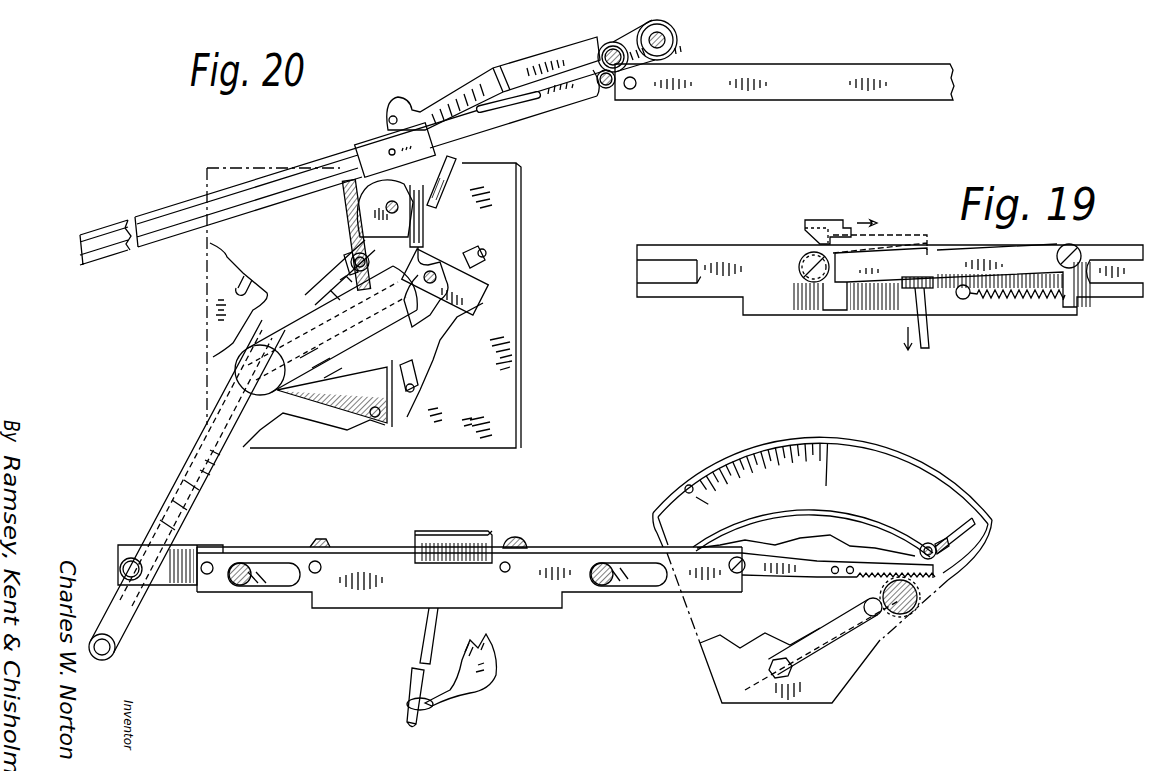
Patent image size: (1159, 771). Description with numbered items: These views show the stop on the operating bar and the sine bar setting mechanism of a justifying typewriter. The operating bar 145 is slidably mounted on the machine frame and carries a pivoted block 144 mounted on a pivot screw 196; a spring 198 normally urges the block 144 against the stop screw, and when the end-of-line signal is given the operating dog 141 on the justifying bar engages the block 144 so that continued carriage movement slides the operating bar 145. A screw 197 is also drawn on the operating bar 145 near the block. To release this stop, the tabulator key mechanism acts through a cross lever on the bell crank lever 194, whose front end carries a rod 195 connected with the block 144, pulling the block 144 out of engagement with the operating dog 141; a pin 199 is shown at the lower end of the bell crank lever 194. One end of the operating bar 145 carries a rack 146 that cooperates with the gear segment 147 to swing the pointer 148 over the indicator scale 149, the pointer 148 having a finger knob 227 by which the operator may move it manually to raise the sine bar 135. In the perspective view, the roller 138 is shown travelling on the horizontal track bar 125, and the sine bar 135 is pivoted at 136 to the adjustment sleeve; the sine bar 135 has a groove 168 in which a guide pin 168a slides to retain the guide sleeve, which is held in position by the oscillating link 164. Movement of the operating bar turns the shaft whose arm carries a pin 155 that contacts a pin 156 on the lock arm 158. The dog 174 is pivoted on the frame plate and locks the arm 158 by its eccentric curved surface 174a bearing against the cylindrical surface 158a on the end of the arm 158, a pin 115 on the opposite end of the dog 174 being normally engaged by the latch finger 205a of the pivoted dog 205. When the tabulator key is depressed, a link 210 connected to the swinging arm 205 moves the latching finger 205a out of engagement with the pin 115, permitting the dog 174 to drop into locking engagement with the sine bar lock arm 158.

In FIG. 20, the sine bar 135 is at (160, 209).
In FIG. 20, the oscillating link 164 is at (490, 70).
In FIG. 20, the roller 138 is at (604, 50).
In FIG. 20, the guide pin 168a is at (380, 143).
In FIG. 20, the groove 168 is at (500, 114).
In FIG. 20, the pivot 136 is at (597, 100).
In FIG. 20, the track bar 125 is at (728, 98).
In FIG. 20, the pin 115 is at (447, 160).
In FIG. 20, the dog 174 is at (367, 207).
In FIG. 20, the eccentric curved surface 174a is at (340, 289).
In FIG. 20, the pin 155 is at (356, 258).
In FIG. 20, the pin 156 is at (341, 263).
In FIG. 20, the latch finger 205a is at (428, 212).
In FIG. 20, the pivoted dog 205 is at (213, 357).
In FIG. 20, the cylindrical surface 158a is at (455, 310).
In FIG. 20, the lock arm 158 is at (420, 340).
In FIG. 20, the link 210 is at (372, 328).
In FIG. 20, the pivot screw 196 is at (318, 540).
In FIG. 19, the pivot screw 196 is at (1074, 248).
In FIG. 20, the bell crank lever 194 is at (452, 531).
In FIG. 20, the screw 197 is at (515, 539).
In FIG. 19, the screw 197 is at (803, 270).
In FIG. 20, the operating bar 145 is at (548, 608).
In FIG. 19, the operating bar 145 is at (755, 252).
In FIG. 20, the rod 195 is at (422, 634).
In FIG. 19, the rod 195 is at (932, 333).
In FIG. 20, the pin 199 is at (426, 708).
In FIG. 20, the indicator scale 149 is at (932, 473).
In FIG. 20, the rack 146 is at (870, 570).
In FIG. 20, the finger knob 227 is at (930, 543).
In FIG. 20, the pointer 148 is at (962, 533).
In FIG. 20, the gear segment 147 is at (908, 607).
In FIG. 19, the operating dog 141 is at (823, 222).
In FIG. 19, the block 144 is at (848, 270).
In FIG. 19, the spring 198 is at (1030, 303).